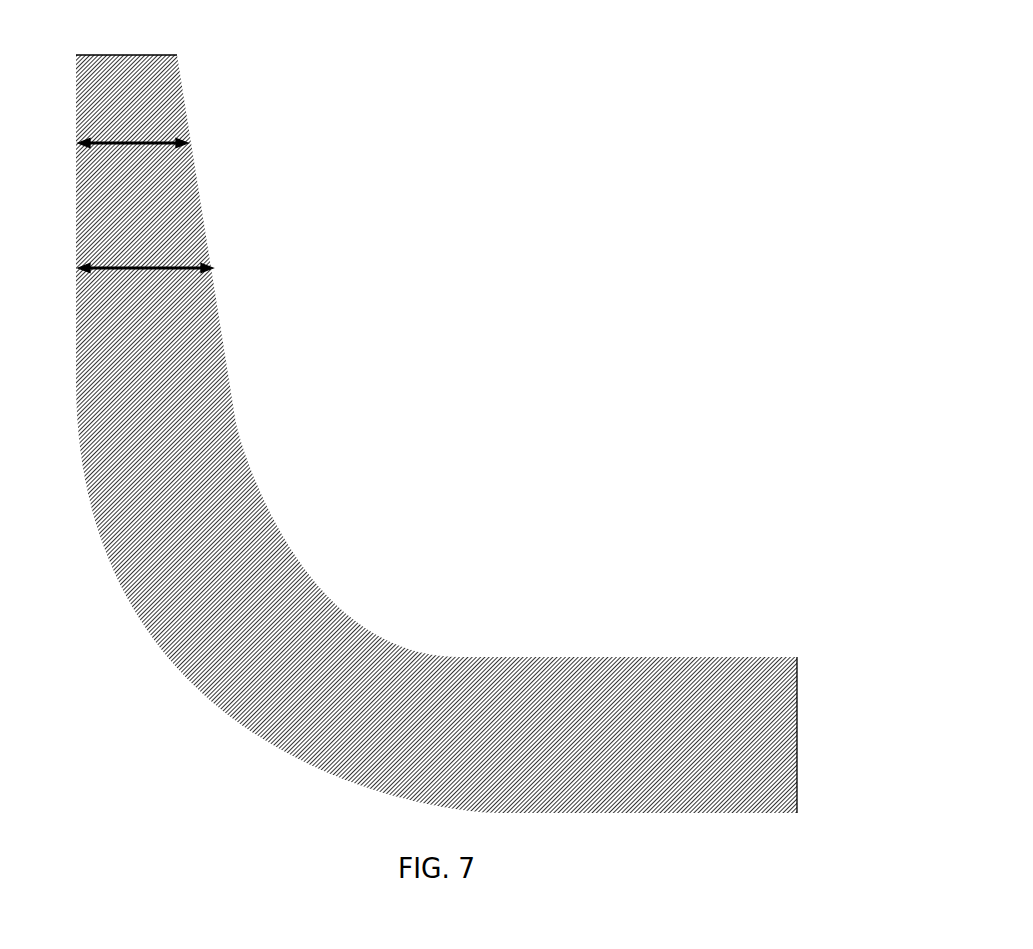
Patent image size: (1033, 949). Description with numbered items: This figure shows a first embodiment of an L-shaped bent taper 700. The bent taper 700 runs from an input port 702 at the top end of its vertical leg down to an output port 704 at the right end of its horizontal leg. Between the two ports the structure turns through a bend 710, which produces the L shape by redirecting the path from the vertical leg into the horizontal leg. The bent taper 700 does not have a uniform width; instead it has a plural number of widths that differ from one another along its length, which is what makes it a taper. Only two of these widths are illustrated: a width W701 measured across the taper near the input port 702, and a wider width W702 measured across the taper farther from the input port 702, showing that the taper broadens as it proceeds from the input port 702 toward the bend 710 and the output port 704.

The bent taper 700 is at (447, 192).
The input port 702 is at (150, 44).
The output port 704 is at (773, 719).
The bend 710 is at (314, 552).
The width W701 is at (170, 145).
The width W702 is at (180, 278).